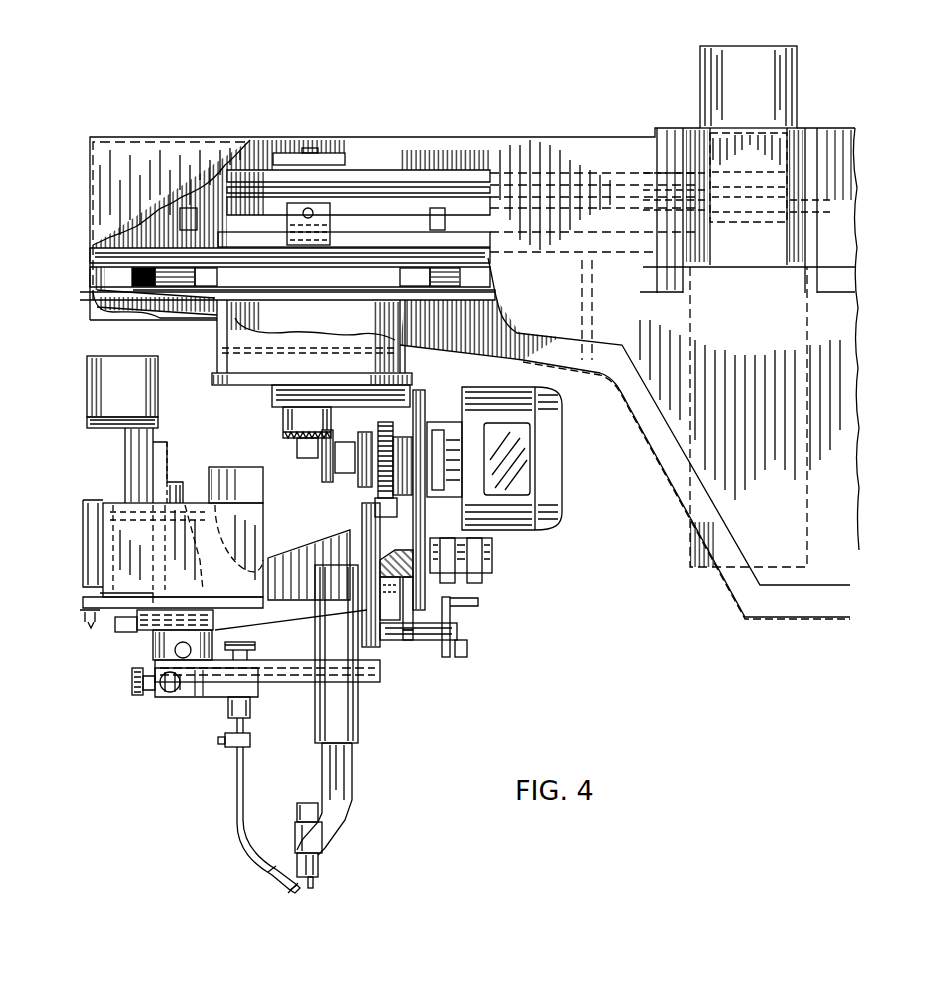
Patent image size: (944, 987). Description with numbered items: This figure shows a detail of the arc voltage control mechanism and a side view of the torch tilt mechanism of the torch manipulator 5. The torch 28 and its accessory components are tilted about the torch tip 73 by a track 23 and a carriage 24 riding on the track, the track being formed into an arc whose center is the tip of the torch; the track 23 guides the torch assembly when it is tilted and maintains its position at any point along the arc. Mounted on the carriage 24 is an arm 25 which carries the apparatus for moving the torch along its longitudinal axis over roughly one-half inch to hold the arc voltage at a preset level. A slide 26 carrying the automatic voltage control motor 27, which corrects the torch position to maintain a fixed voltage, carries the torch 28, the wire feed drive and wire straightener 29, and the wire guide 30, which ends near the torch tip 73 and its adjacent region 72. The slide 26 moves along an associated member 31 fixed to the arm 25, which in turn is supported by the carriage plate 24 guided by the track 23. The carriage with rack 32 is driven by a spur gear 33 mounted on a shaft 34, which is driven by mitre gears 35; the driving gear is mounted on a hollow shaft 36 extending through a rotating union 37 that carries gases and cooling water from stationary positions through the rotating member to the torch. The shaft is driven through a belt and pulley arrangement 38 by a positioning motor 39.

The torch manipulator 5 is at (600, 631).
The track 23 is at (405, 558).
The carriage 24 is at (372, 603).
The arm 25 is at (298, 560).
The slide 26 is at (135, 476).
The automatic voltage control motor 27 is at (121, 362).
The torch 28 is at (358, 718).
The wire straightener 29 is at (240, 468).
The wire guide 30 is at (237, 813).
The associated member 31 is at (178, 458).
The rack 32 is at (397, 512).
The spur gear 33 is at (395, 460).
The shaft 34 is at (358, 477).
The mitre gears 35 is at (297, 448).
The hollow shaft 36 is at (307, 453).
The rotating union 37 is at (217, 348).
The belt and pulley arrangement 38 is at (422, 173).
The positioning motor 39 is at (748, 58).
The tube tip 72 is at (300, 888).
The torch tip 73 is at (312, 888).